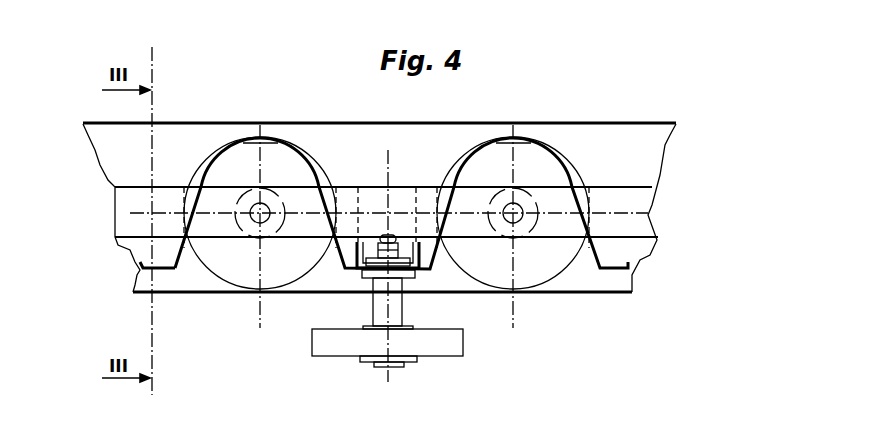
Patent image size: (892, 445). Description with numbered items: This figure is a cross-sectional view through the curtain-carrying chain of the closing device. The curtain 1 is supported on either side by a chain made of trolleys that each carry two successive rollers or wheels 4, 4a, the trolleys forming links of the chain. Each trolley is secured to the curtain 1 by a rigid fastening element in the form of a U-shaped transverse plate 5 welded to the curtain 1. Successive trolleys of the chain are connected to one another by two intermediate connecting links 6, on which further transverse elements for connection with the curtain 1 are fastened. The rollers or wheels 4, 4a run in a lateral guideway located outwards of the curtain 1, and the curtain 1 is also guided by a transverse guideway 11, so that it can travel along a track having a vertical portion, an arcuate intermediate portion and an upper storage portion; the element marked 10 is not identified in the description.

The curtain 1 is at (457, 178).
The roller or wheel 4 is at (277, 266).
The roller or wheel 4a is at (548, 265).
The U-shaped transverse plate 5 is at (345, 270).
The intermediate connecting link 6 is at (142, 200).
The load carrier 10 is at (453, 347).
The transverse guideway 11 is at (446, 277).